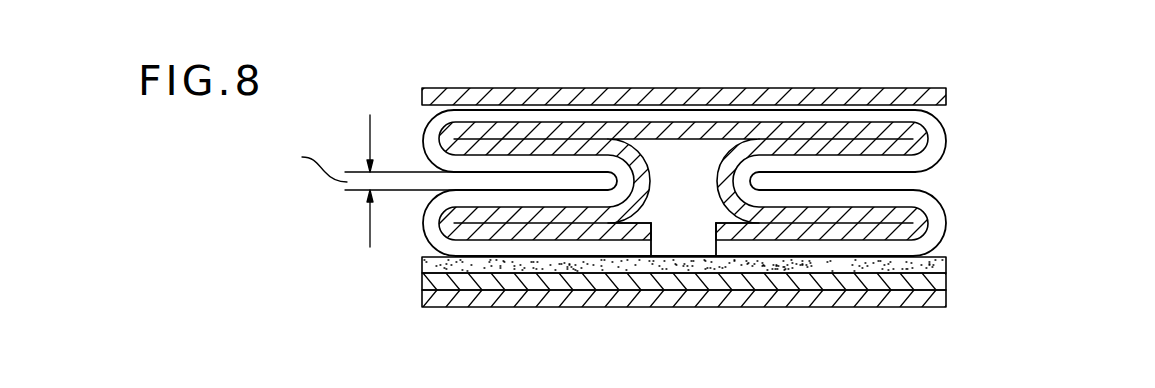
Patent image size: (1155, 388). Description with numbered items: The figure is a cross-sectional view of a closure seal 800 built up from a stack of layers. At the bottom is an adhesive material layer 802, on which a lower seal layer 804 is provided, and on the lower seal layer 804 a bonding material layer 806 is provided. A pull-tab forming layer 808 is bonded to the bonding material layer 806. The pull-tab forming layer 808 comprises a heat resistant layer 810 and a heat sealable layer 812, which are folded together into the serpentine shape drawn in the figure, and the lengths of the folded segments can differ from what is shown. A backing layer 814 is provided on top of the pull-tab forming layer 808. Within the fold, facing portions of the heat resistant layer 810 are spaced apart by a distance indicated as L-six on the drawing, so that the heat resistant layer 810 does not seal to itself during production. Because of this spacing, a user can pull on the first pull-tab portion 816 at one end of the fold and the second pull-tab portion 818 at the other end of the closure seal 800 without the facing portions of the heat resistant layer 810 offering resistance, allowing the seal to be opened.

The closure seal 800 is at (1067, 121).
The adhesive material layer 802 is at (442, 295).
The lower seal layer 804 is at (430, 283).
The bonding material layer 806 is at (420, 261).
The pull-tab forming layer 808 is at (967, 107).
The heat resistant layer 810 is at (478, 111).
The heat sealable layer 812 is at (570, 127).
The backing layer 814 is at (843, 98).
The first pull-tab portion 816 is at (422, 120).
The second pull-tab portion 818 is at (945, 119).